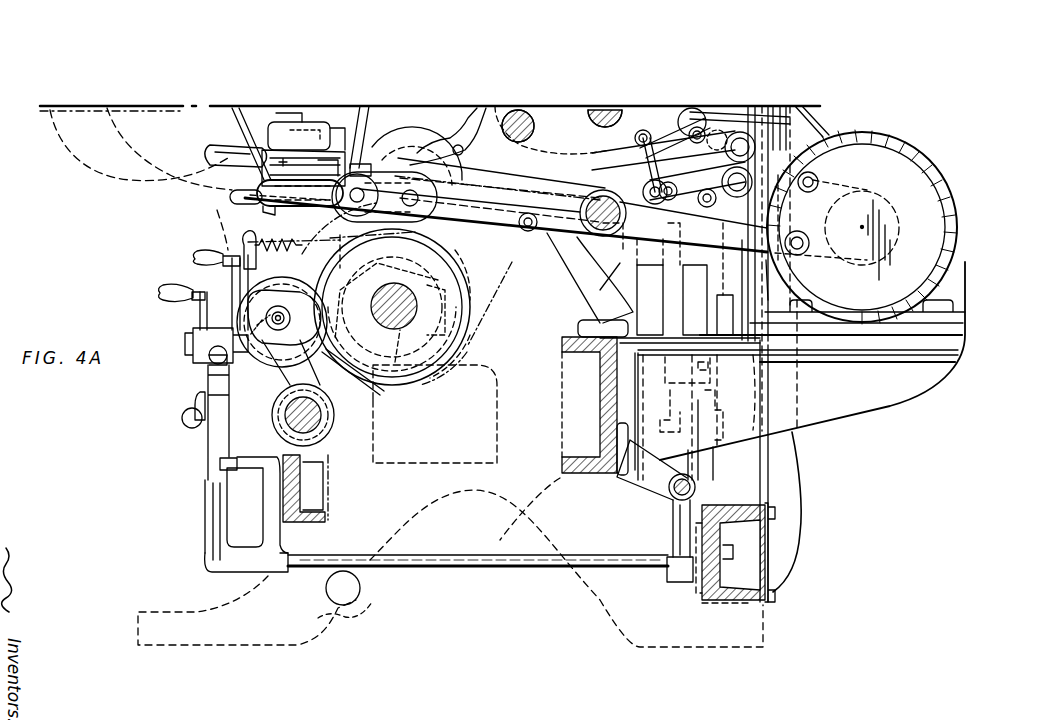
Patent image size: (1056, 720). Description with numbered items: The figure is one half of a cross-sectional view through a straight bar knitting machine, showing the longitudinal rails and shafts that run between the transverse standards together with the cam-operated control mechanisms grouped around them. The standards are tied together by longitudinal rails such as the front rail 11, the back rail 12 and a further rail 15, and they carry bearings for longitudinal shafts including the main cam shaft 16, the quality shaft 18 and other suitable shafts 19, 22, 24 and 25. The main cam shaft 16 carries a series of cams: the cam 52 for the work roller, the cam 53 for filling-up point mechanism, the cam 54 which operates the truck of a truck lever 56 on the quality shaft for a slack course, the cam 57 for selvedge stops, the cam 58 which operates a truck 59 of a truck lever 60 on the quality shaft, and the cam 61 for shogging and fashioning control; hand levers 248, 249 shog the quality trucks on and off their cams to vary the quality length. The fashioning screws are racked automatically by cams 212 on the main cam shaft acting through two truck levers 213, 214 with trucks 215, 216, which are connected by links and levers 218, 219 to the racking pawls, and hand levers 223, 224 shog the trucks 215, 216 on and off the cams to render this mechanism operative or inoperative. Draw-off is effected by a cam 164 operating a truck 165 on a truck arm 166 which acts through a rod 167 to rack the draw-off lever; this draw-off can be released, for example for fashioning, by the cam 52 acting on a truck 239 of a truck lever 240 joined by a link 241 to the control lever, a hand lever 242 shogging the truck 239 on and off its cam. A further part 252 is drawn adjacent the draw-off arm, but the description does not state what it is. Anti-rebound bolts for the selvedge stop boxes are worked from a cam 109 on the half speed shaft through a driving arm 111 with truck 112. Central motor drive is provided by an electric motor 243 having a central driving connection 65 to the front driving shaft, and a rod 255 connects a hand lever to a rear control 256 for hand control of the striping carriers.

The front rail 11 is at (292, 503).
The back rail 12 is at (607, 444).
The rail 15 is at (718, 577).
The main cam shaft 16 is at (412, 304).
The quality shaft 18 is at (290, 433).
The shaft 19 is at (355, 139).
The shaft 22 is at (534, 126).
The shaft 24 is at (597, 222).
The shaft 25 is at (360, 590).
The cam 52 is at (374, 240).
The cam 53 is at (448, 253).
The cam 54 is at (463, 355).
The truck lever 56 is at (198, 323).
The cam 57 is at (470, 331).
The cam 58 is at (413, 373).
The truck 59 is at (200, 357).
The truck lever 60 is at (182, 416).
The cam 61 is at (412, 388).
The central driving connection 65 is at (76, 158).
The cam 109 is at (803, 114).
The driving arm 111 is at (637, 139).
The truck 112 is at (637, 123).
The cam 164 is at (348, 345).
The truck 165 is at (368, 332).
The truck arm 166 is at (322, 376).
The rod 167 is at (196, 398).
The cams 212 is at (450, 311).
The truck lever 213 is at (520, 183).
The truck lever 214 is at (598, 192).
The truck 215 is at (404, 168).
The truck 216 is at (382, 153).
The links and levers 218 is at (652, 178).
The links and levers 219 is at (818, 131).
The hand lever 223 is at (213, 165).
The hand lever 224 is at (303, 168).
The truck 239 is at (438, 228).
The truck lever 240 is at (298, 206).
The link 241 is at (230, 113).
The hand lever 242 is at (240, 196).
The electric motor 243 is at (932, 233).
The hand lever 248 is at (195, 261).
The hand lever 249 is at (183, 296).
The cable 252 is at (367, 379).
The rod 255 is at (512, 570).
The rear control 256 is at (695, 484).